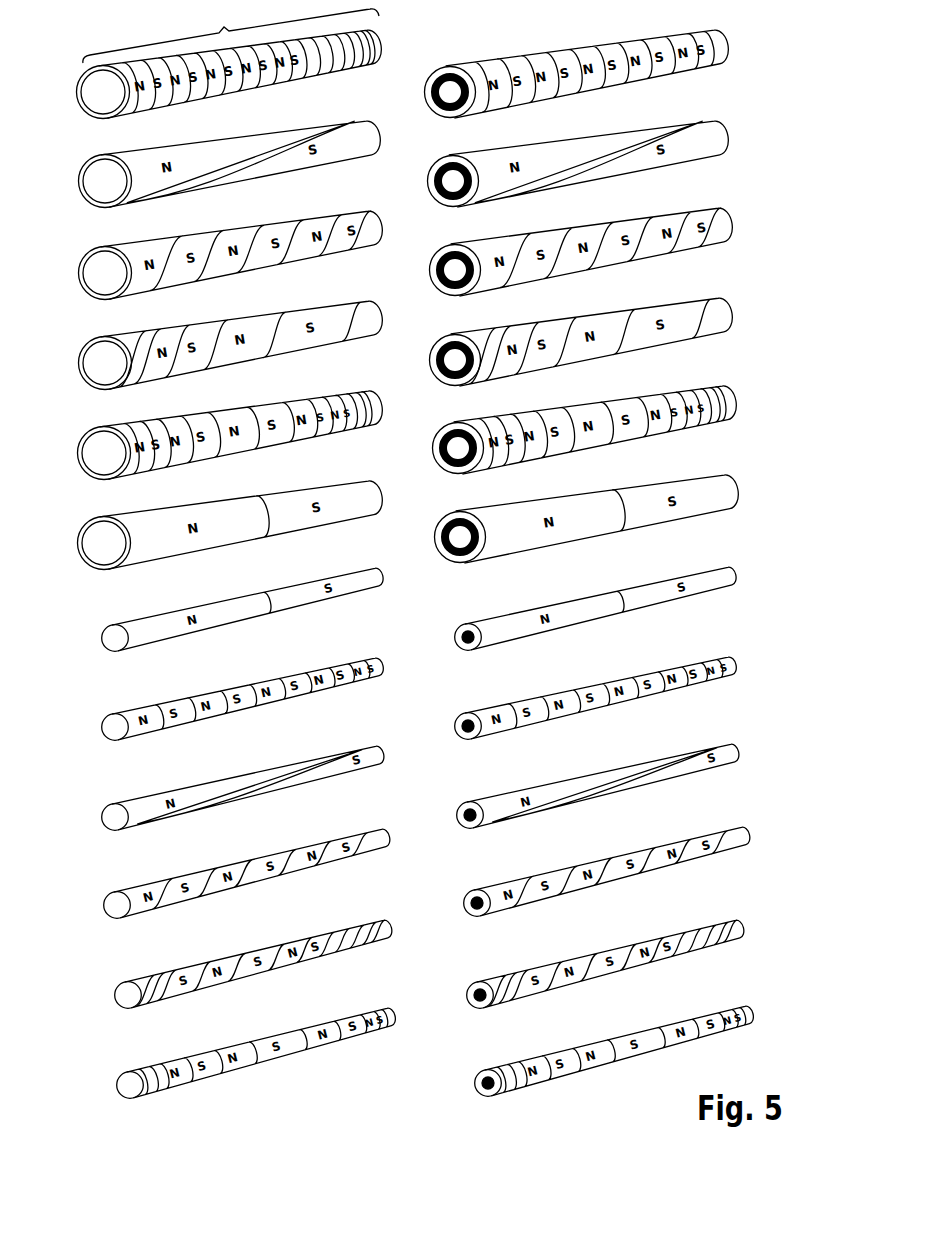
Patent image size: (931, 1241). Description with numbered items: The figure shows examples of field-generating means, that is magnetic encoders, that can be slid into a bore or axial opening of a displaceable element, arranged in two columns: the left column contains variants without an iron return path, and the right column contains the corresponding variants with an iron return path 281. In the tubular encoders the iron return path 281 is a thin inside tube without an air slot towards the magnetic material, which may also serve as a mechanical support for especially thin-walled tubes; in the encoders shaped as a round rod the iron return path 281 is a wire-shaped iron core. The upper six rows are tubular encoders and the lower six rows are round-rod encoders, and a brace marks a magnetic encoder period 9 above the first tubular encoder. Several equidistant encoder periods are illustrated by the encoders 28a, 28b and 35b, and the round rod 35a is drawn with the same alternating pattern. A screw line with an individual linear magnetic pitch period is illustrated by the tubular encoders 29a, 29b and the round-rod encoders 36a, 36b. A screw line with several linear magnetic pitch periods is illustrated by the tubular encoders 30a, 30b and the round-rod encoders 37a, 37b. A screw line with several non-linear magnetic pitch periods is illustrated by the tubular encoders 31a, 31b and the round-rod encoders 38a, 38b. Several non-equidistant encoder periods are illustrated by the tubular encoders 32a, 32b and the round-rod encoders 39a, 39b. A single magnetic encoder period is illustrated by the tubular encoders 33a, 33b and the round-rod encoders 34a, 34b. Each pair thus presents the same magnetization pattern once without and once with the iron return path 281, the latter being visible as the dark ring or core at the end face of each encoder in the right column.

The magnetic encoder period 9 is at (231, 32).
The encoder with several equidistant encoder periods without return path 28a is at (209, 70).
The encoder with screw line of individual linear pitch period without return path 29a is at (209, 163).
The encoder with screw line of several linear pitch periods without return path 30a is at (210, 253).
The encoder with screw line of several non-linear pitch periods without return path 31a is at (210, 343).
The encoder with several non-equidistant encoder periods without return path 32a is at (210, 432).
The encoder with one magnetic encoder period without return path 33a is at (210, 521).
The round-rod encoder with one magnetic encoder period without return path 34a is at (210, 607).
The round-rod encoder with several equidistant encoder periods without return path 35a is at (210, 701).
The round-rod encoder with screw line of individual linear pitch period without retu 36a is at (211, 790).
The round-rod encoder with screw line of several linear pitch periods without return 37a is at (214, 876).
The round-rod encoder with screw line of several non-linear pitch periods without re 38a is at (215, 964).
The round-rod encoder with several non-equidistant encoder periods without return pa 39a is at (216, 1052).
The encoder with several equidistant encoder periods with return path 28b is at (622, 68).
The encoder with screw line of individual linear pitch period with return path 29b is at (624, 158).
The encoder with screw line of several linear pitch periods with return path 30b is at (625, 246).
The encoder with screw line of several non-linear pitch periods with return path 31b is at (625, 336).
The encoder with several non-equidistant encoder periods with return path 32b is at (626, 424).
The encoder with one magnetic encoder period with return path 33b is at (627, 513).
The round-rod encoder with one magnetic encoder period with return path 34b is at (637, 604).
The round-rod encoder with several equidistant encoder periods with return path 35b is at (637, 692).
The round-rod encoder with screw line of individual linear pitch period with return 36b is at (638, 779).
The round-rod encoder with screw line of several linear pitch periods with return pa 37b is at (641, 869).
The round-rod encoder with screw line of several non-linear pitch periods with retur 38b is at (643, 959).
The round-rod encoder with several non-equidistant encoder periods with return path 39b is at (647, 1045).
The iron return path 281 is at (453, 156).